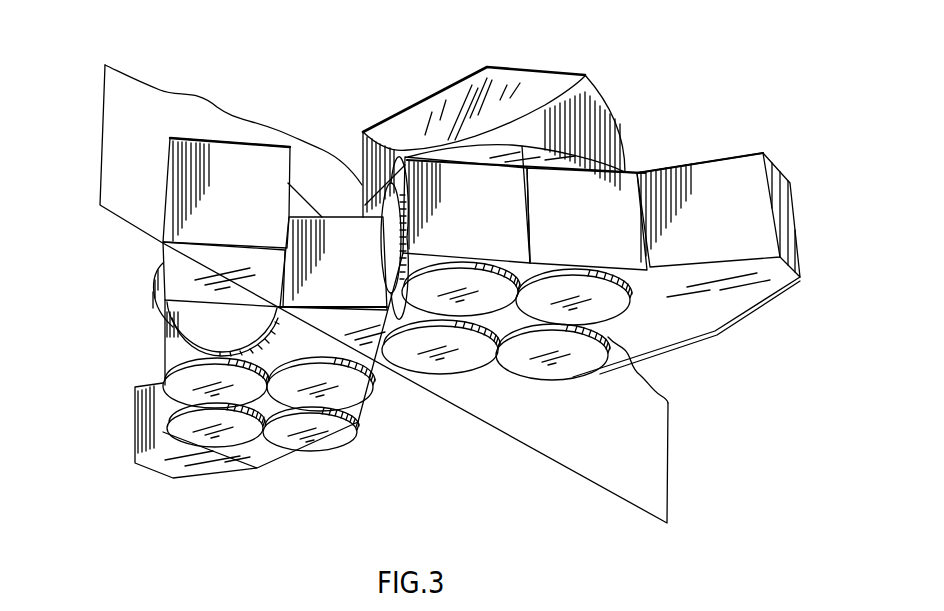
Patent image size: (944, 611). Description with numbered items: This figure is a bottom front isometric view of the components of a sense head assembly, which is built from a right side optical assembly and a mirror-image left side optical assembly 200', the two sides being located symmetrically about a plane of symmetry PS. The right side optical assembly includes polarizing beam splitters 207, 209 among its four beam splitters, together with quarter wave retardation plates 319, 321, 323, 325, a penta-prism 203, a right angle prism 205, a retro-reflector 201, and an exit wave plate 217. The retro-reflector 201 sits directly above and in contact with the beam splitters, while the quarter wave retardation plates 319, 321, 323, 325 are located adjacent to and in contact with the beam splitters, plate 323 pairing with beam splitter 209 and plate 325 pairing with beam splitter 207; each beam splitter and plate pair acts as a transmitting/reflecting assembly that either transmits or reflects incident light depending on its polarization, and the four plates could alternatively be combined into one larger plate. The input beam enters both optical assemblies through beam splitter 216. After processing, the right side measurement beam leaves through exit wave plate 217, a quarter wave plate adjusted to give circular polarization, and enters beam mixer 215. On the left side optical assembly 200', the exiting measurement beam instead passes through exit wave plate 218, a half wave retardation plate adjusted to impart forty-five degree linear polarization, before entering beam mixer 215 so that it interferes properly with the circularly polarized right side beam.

The left side optical assembly 200' is at (267, 438).
The retro-reflector 201 is at (553, 73).
The penta-prism 203 is at (746, 235).
The right angle prism 205 is at (657, 338).
The polarizing beam splitter 207 is at (602, 230).
The polarizing beam splitter 209 is at (498, 230).
The beam mixer 215 is at (257, 222).
The beam splitter 216 is at (367, 293).
The exit wave plate 217 is at (388, 242).
The exit wave plate 218 is at (217, 323).
The quarter wave retardation plate 319 is at (440, 367).
The quarter wave retardation plate 321 is at (570, 376).
The quarter wave retardation plate 323 is at (463, 313).
The quarter wave retardation plate 325 is at (627, 300).
The plane of symmetry PS is at (130, 222).